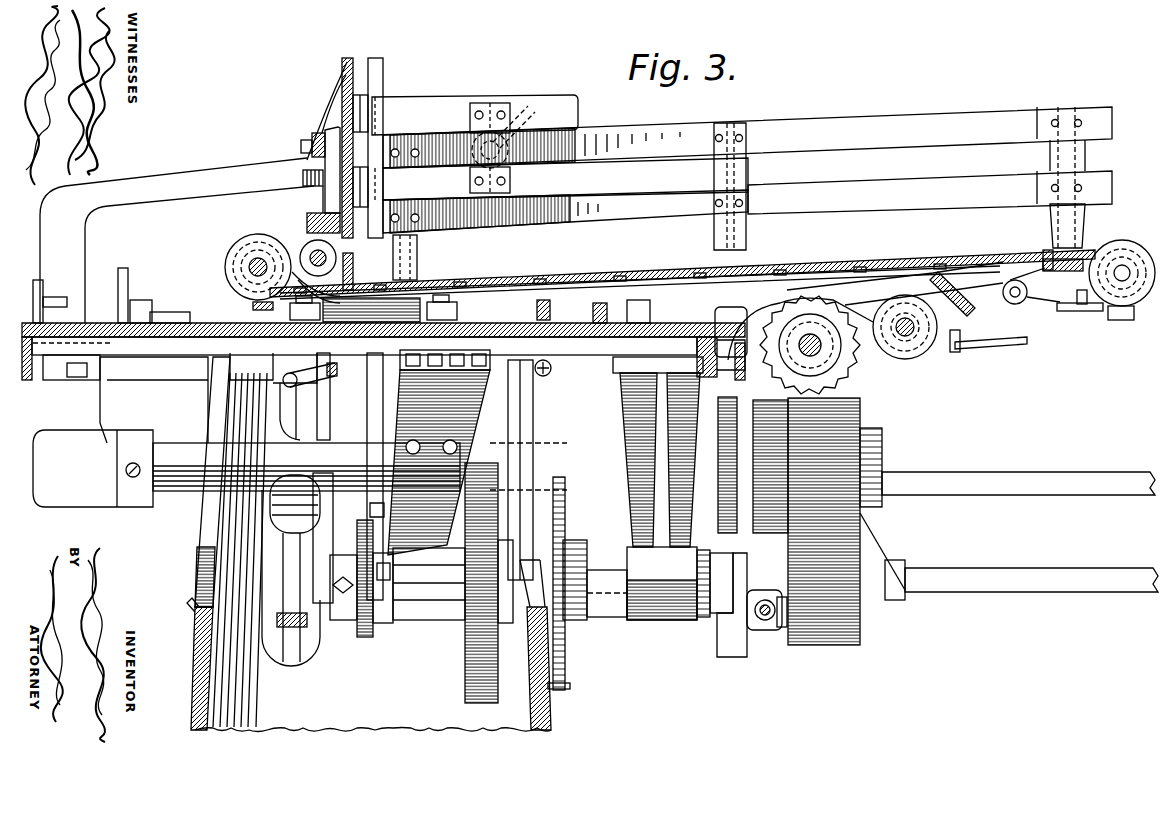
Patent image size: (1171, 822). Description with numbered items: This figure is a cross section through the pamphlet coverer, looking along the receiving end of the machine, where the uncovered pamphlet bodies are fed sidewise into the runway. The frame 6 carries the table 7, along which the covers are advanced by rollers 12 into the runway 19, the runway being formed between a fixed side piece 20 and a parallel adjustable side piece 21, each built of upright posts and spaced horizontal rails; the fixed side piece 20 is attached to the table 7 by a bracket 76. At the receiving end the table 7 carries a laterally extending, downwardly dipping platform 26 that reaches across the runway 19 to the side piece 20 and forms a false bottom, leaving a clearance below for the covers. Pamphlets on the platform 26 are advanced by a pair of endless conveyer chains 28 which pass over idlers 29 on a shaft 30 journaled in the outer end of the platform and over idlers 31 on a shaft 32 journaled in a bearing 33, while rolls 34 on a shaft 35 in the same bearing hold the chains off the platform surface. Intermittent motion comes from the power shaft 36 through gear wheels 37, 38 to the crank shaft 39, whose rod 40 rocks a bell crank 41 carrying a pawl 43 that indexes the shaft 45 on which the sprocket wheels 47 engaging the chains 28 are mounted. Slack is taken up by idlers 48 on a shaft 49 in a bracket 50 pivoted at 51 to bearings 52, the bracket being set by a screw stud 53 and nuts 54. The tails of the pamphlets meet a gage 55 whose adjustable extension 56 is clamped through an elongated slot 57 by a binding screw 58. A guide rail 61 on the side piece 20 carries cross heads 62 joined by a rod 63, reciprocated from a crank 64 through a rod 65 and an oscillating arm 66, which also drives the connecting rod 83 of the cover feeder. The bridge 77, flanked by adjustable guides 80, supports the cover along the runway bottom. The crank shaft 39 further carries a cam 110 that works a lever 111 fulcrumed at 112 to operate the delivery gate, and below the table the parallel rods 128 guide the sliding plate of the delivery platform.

The frame 6 is at (197, 610).
The table 7 is at (177, 335).
The rollers 12 is at (360, 117).
The runway 19 is at (352, 67).
The fixed side piece 20 is at (366, 77).
The adjustable side piece 21 is at (373, 63).
The platform 26 is at (617, 250).
The endless conveyer chains 28 is at (508, 257).
The idlers 29 is at (1130, 320).
The shaft 30 is at (1114, 273).
The idlers 31 is at (238, 272).
The shaft 32 is at (239, 272).
The bearing 33 is at (293, 257).
The rolls 34 is at (337, 260).
The shaft 35 is at (312, 250).
The power shaft 36 is at (187, 457).
The gear wheel 37 is at (493, 432).
The gear wheel 38 is at (467, 653).
The crank shaft 39 is at (607, 583).
The rod 40 is at (763, 637).
The bell crank 41 is at (755, 415).
The pawl 43 is at (742, 400).
The shaft 45 is at (810, 337).
The sprocket wheels 47 is at (820, 377).
The idlers 48 is at (920, 357).
The shaft 49 is at (911, 343).
The bracket 50 is at (968, 300).
The pivot 51 is at (1020, 304).
The bearings 52 is at (1010, 282).
The screw stud 53 is at (955, 342).
The nuts 54 is at (957, 330).
The gage 55 is at (845, 98).
The adjustable extension 56 is at (537, 105).
The elongated slot 57 is at (545, 138).
The binding screw 58 is at (483, 147).
The guide rail 61 is at (301, 147).
The cross heads 62 is at (312, 137).
The rod 63 is at (313, 207).
The crank 64 is at (317, 607).
The rod 65 is at (283, 545).
The oscillating arm 66 is at (298, 425).
The bracket 76 is at (187, 160).
The bridge 77 is at (370, 312).
The adjustable guides 80 is at (580, 318).
The connecting rod 83 is at (330, 387).
The cam 110 is at (540, 655).
The lever 111 is at (533, 398).
The fulcrum 112 is at (537, 483).
The parallel rods 128 is at (945, 600).